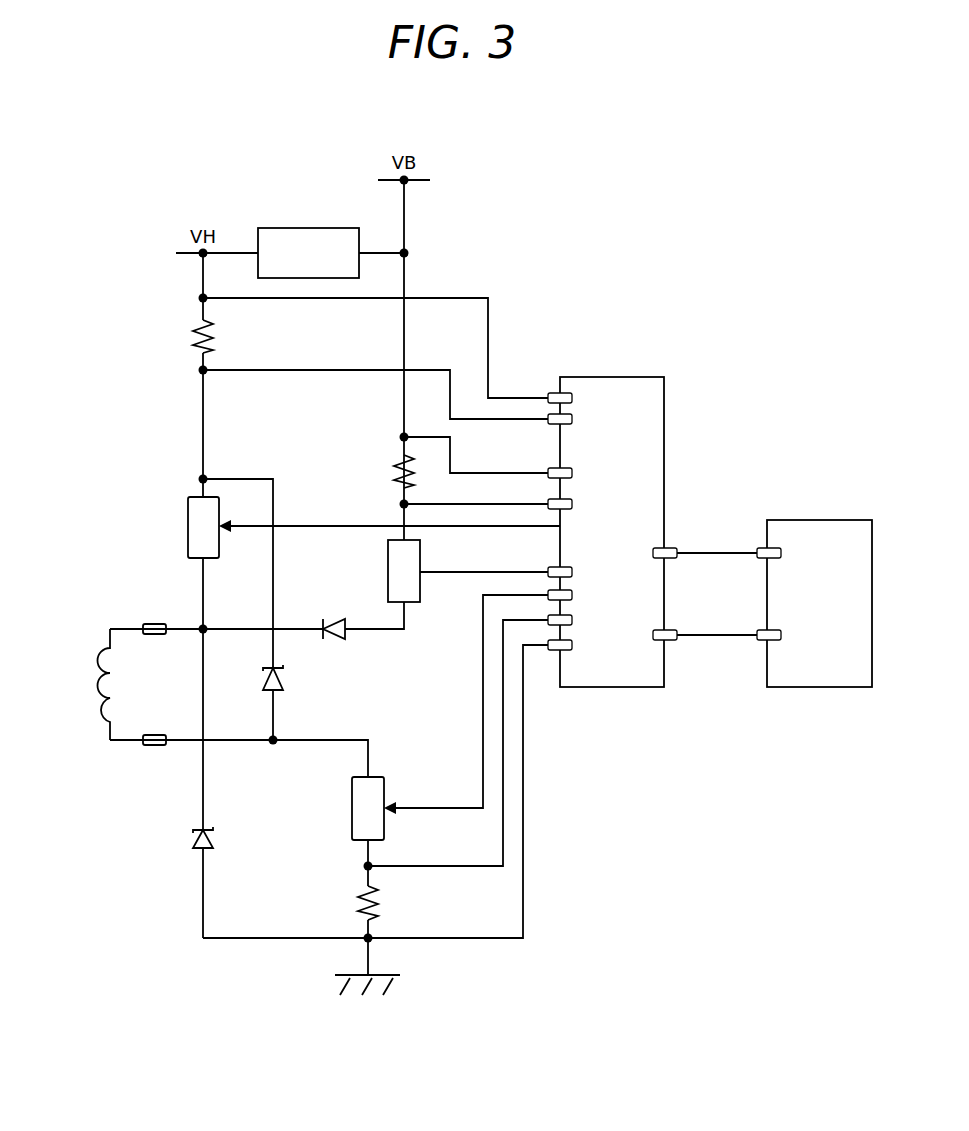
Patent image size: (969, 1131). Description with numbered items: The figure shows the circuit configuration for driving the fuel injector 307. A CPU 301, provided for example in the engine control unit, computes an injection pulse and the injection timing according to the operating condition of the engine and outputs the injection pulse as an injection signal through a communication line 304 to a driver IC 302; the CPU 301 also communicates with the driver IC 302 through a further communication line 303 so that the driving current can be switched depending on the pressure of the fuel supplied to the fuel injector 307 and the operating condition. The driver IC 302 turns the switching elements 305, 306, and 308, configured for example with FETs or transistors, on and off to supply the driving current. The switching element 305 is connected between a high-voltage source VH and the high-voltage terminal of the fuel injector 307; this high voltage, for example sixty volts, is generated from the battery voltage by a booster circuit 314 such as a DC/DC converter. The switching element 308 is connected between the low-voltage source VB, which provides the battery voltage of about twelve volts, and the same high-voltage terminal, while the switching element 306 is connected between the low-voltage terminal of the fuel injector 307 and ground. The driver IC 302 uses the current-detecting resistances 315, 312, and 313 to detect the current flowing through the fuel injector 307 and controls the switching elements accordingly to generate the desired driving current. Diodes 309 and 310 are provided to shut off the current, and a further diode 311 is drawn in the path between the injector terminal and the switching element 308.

The CPU 301 is at (813, 520).
The driver IC 302 is at (608, 377).
The communication line 303 is at (707, 553).
The communication line 304 is at (715, 635).
The switching element 305 is at (188, 527).
The switching element 306 is at (352, 806).
The fuel injector 307 is at (97, 681).
The switching element 308 is at (388, 574).
The diode 309 is at (195, 833).
The diode 310 is at (286, 678).
The diode 311 is at (347, 637).
The resistance 312 is at (190, 336).
The resistance 313 is at (393, 468).
The booster circuit 314 is at (305, 228).
The resistance 315 is at (356, 901).